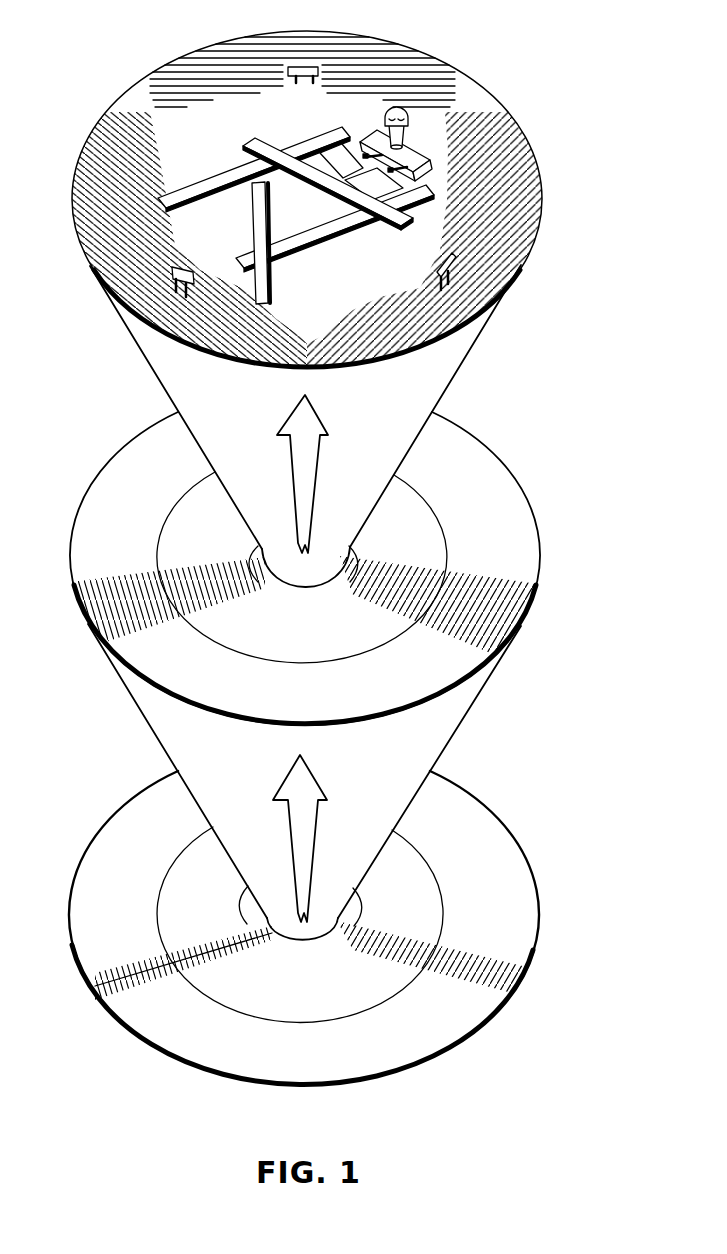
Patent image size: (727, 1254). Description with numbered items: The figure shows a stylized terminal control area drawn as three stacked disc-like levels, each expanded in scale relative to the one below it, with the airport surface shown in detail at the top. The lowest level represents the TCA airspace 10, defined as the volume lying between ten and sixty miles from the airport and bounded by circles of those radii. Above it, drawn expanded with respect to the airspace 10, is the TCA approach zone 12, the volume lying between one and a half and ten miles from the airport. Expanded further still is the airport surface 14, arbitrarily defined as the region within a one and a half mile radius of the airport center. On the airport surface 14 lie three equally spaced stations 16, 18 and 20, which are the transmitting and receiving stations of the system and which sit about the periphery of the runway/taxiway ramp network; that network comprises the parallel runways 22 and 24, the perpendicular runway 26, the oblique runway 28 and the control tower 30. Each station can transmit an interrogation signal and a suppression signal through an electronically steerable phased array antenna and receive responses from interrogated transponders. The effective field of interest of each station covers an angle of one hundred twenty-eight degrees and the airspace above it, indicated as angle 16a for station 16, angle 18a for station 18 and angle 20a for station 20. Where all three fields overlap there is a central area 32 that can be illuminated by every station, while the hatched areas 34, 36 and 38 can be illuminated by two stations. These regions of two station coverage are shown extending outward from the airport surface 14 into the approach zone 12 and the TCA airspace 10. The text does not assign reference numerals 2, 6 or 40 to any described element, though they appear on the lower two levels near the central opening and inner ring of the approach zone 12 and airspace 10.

The central opening 2 is at (333, 583).
The annular ring 6 is at (393, 643).
The TCA airspace 10 is at (356, 927).
The TCA approach zone 12 is at (351, 568).
The airport surface 14 is at (332, 198).
The station 16 is at (308, 63).
The angle 16a is at (345, 96).
The station 18 is at (448, 281).
The angle 18a is at (440, 222).
The station 20 is at (293, 958).
The angle 20a is at (178, 236).
The parallel runway 22 is at (177, 197).
The parallel runway 24 is at (337, 226).
The perpendicular runway 26 is at (413, 217).
The oblique runway 28 is at (258, 300).
The control tower 30 is at (400, 107).
The central area 32 is at (183, 138).
The area 34 is at (242, 65).
The area 36 is at (490, 262).
The area 38 is at (99, 233).
The annular ring 40 is at (407, 992).